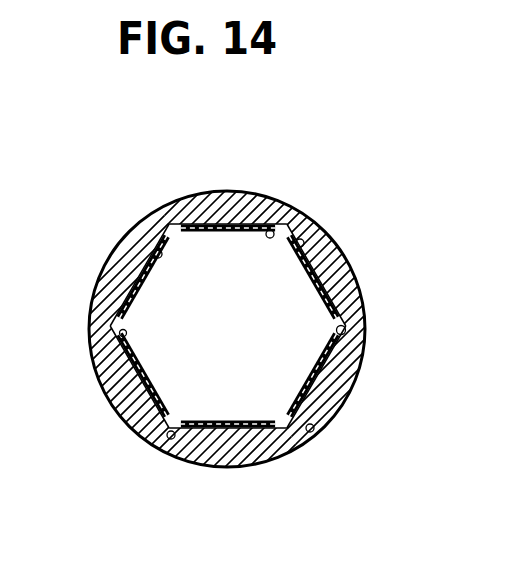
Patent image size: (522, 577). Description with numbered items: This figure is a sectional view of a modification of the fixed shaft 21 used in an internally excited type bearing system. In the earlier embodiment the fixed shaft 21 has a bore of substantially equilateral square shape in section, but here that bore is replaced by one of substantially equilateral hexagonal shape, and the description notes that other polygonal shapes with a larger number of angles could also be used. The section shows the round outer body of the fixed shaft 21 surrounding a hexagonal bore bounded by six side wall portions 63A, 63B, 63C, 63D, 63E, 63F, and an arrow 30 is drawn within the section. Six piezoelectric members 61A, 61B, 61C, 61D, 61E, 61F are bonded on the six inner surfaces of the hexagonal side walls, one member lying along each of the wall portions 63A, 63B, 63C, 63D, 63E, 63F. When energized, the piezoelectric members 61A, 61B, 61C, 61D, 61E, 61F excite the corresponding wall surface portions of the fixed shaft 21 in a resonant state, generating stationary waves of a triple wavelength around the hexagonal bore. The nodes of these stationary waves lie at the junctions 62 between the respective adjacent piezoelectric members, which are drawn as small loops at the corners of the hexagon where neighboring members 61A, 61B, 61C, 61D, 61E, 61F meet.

The fixed shaft 21 is at (362, 290).
The direction of view 30 is at (145, 323).
The piezoelectric member 61A is at (272, 432).
The piezoelectric member 61B is at (346, 330).
The piezoelectric member 61C is at (302, 244).
The piezoelectric member 61D is at (268, 228).
The piezoelectric member 61E is at (146, 256).
The piezoelectric member 61F is at (146, 410).
The junction 62 is at (314, 428).
The wall segment 63A is at (225, 468).
The wall segment 63B is at (356, 385).
The wall segment 63C is at (348, 262).
The wall segment 63D is at (233, 191).
The wall segment 63E is at (110, 258).
The wall segment 63F is at (100, 376).